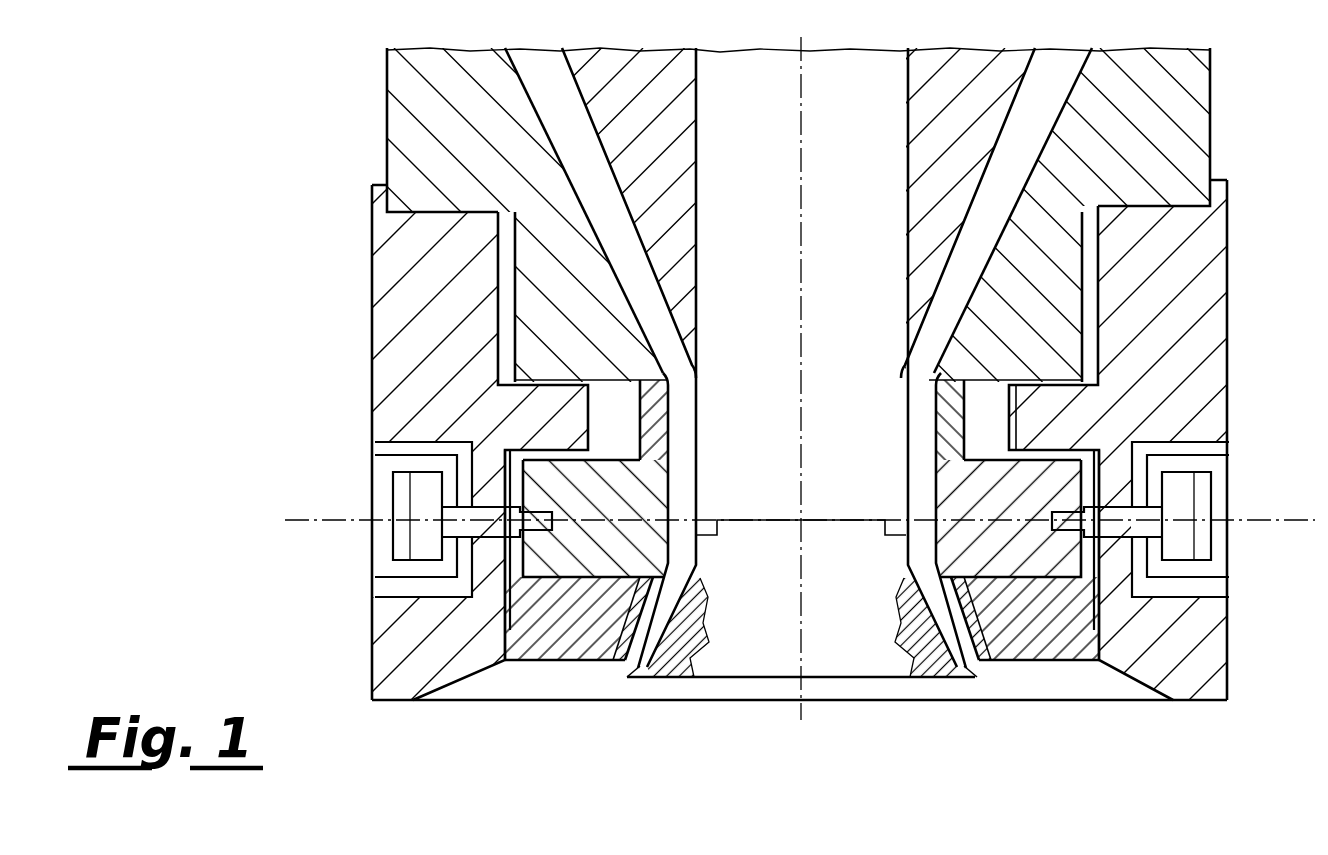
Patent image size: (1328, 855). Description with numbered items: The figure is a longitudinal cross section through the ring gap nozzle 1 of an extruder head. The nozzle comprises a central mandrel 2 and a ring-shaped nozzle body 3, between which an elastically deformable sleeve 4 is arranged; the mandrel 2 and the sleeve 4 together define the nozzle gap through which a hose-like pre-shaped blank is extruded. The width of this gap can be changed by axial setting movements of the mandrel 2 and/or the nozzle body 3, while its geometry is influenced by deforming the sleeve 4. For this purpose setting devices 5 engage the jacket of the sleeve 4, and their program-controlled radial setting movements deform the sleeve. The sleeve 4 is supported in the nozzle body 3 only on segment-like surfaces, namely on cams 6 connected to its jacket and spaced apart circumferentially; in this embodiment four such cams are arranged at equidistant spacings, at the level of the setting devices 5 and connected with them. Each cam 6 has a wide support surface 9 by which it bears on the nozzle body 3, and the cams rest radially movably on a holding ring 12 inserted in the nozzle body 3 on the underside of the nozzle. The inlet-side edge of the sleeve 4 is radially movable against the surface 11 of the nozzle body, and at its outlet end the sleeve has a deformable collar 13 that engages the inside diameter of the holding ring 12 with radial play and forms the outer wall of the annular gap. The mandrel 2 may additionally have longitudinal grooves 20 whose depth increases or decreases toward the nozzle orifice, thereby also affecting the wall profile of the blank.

The ring gap nozzle 1 is at (276, 113).
The mandrel 2 is at (303, 490).
The ring-shaped nozzle body 3 is at (372, 172).
The elastically deformable sleeve 4 is at (700, 412).
The setting devices 5 is at (403, 543).
The cams 6 is at (612, 560).
The support surface 9 is at (560, 612).
The surface of the nozzle body 11 is at (697, 247).
The holding ring 12 is at (507, 640).
The deformable collar 13 is at (640, 670).
The grooves 20 is at (675, 640).